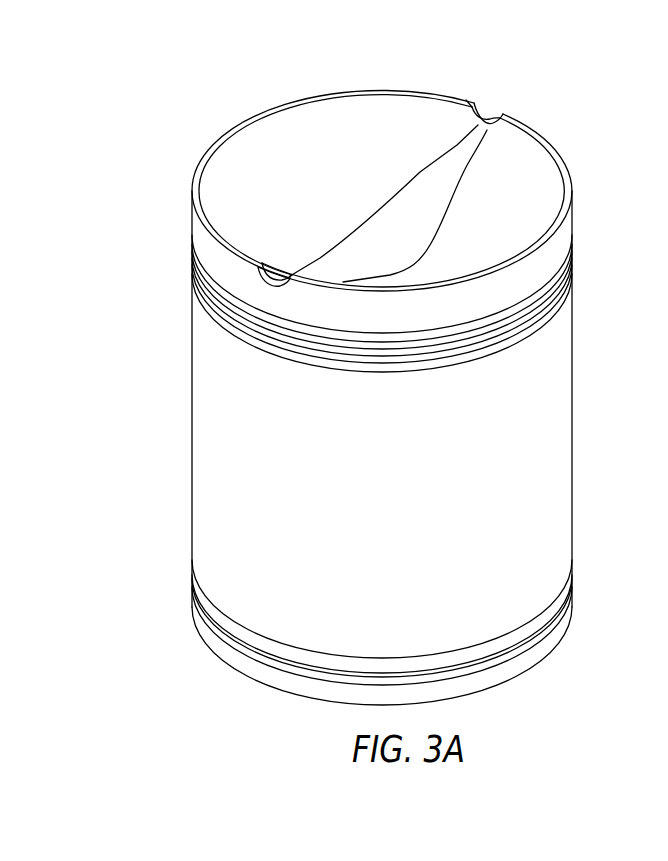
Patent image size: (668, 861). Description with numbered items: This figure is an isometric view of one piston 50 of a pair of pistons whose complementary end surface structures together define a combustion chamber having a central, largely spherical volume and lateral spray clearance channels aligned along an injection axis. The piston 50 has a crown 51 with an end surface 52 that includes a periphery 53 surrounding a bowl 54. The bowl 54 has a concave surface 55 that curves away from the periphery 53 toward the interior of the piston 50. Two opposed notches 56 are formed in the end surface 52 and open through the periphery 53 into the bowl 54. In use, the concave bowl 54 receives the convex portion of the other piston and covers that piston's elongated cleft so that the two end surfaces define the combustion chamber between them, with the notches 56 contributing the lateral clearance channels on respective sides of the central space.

The piston 50 is at (582, 367).
The crown 51 is at (556, 241).
The end surface 52 is at (413, 110).
The periphery 53 is at (543, 140).
The bowl 54 is at (362, 106).
The concave surface 55 is at (316, 185).
The notches 56 is at (489, 121).